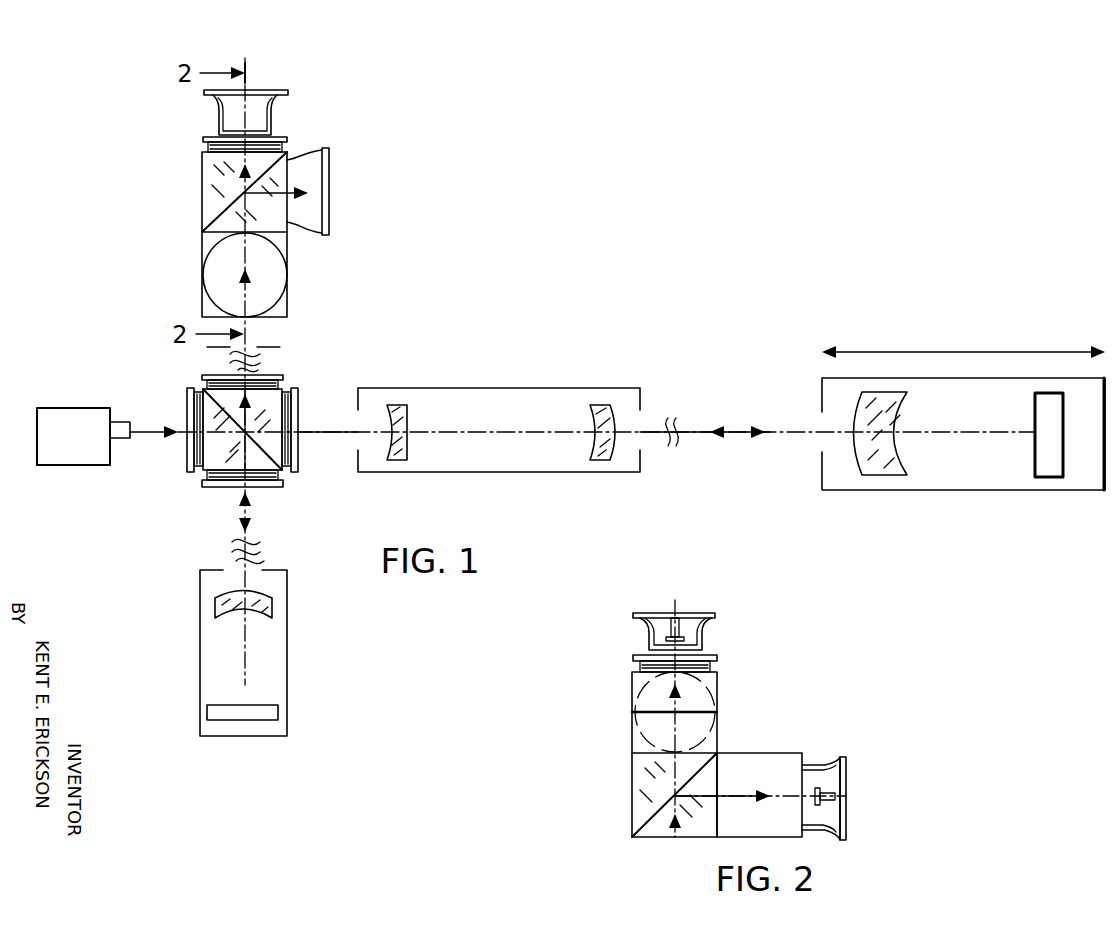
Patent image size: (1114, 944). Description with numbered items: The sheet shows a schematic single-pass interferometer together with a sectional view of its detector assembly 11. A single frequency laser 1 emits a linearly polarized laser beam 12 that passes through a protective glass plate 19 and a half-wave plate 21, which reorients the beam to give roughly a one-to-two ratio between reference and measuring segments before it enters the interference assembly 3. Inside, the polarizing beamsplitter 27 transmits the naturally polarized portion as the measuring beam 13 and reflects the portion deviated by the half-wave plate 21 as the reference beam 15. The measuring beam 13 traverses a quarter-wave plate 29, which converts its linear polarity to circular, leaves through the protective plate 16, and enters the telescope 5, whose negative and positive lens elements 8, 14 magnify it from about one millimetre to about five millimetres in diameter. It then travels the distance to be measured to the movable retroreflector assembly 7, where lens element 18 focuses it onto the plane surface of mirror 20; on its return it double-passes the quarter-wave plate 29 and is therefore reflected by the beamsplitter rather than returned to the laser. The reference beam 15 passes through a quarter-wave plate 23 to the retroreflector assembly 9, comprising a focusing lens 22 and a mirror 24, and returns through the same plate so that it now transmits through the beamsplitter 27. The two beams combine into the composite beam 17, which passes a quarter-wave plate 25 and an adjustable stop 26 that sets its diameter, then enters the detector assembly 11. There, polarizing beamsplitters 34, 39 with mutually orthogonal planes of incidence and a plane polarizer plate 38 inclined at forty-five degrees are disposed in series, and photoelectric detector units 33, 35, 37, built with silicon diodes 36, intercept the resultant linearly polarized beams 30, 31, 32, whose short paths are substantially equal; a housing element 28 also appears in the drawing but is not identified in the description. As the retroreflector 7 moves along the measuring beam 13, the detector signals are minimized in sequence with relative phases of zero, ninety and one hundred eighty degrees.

In FIG. 1, the single frequency laser 1 is at (74, 402).
In FIG. 1, the interference assembly 3 is at (251, 446).
In FIG. 1, the telescope 5 is at (500, 385).
In FIG. 1, the movable lens/mirror retroreflector assembly 7 is at (996, 494).
In FIG. 1, the negative lens element 8 is at (408, 447).
In FIG. 1, the lens/mirror retroreflector assembly 9 is at (292, 678).
In FIG. 1, the detector assembly 11 is at (230, 234).
In FIG. 1, the laser beam 12 is at (149, 435).
In FIG. 1, the measuring beam 13 is at (316, 434).
In FIG. 1, the positive lens element 14 is at (601, 462).
In FIG. 1, the reference beam 15 is at (258, 551).
In FIG. 1, the protective plate 16 is at (292, 456).
In FIG. 1, the recombined beam 17 is at (262, 361).
In FIG. 1, the lens element 18 is at (888, 478).
In FIG. 1, the protective glass plate 19 is at (188, 440).
In FIG. 2, the protective glass plate 19 is at (633, 658).
In FIG. 1, the mirror 20 is at (1046, 479).
In FIG. 1, the half-wave plate 21 is at (190, 392).
In FIG. 1, the focusing lens 22 is at (215, 605).
In FIG. 1, the quarter-wave plate 23 is at (256, 488).
In FIG. 1, the mirror 24 is at (208, 704).
In FIG. 1, the quarter-wave plate 25 is at (205, 379).
In FIG. 1, the adjustable stop 26 is at (272, 347).
In FIG. 1, the polarizing beamsplitter 27 is at (283, 464).
In FIG. 2, the side housing 28 is at (750, 752).
In FIG. 1, the quarter-wave plate 29 is at (298, 416).
In FIG. 2, the resultant linearly polarized beam 30 is at (740, 795).
In FIG. 1, the resultant linearly polarized beam 31 is at (312, 184).
In FIG. 1, the resultant linearly polarized beam 32 is at (246, 112).
In FIG. 1, the photoelectric detector unit 33 is at (278, 276).
In FIG. 2, the photoelectric detector unit 33 is at (816, 760).
In FIG. 2, the polarizing beamsplitter 34 is at (720, 754).
In FIG. 1, the photoelectric detector unit 35 is at (330, 212).
In FIG. 2, the photoelectric detector unit 35 is at (824, 798).
In FIG. 2, the silicon diode 36 is at (688, 630).
In FIG. 1, the photoelectric detector unit 37 is at (288, 92).
In FIG. 2, the photoelectric detector unit 37 is at (715, 626).
In FIG. 1, the plane polarizer plate 38 is at (204, 146).
In FIG. 2, the plane polarizer plate 38 is at (718, 661).
In FIG. 1, the polarizing beamsplitter 39 is at (232, 206).